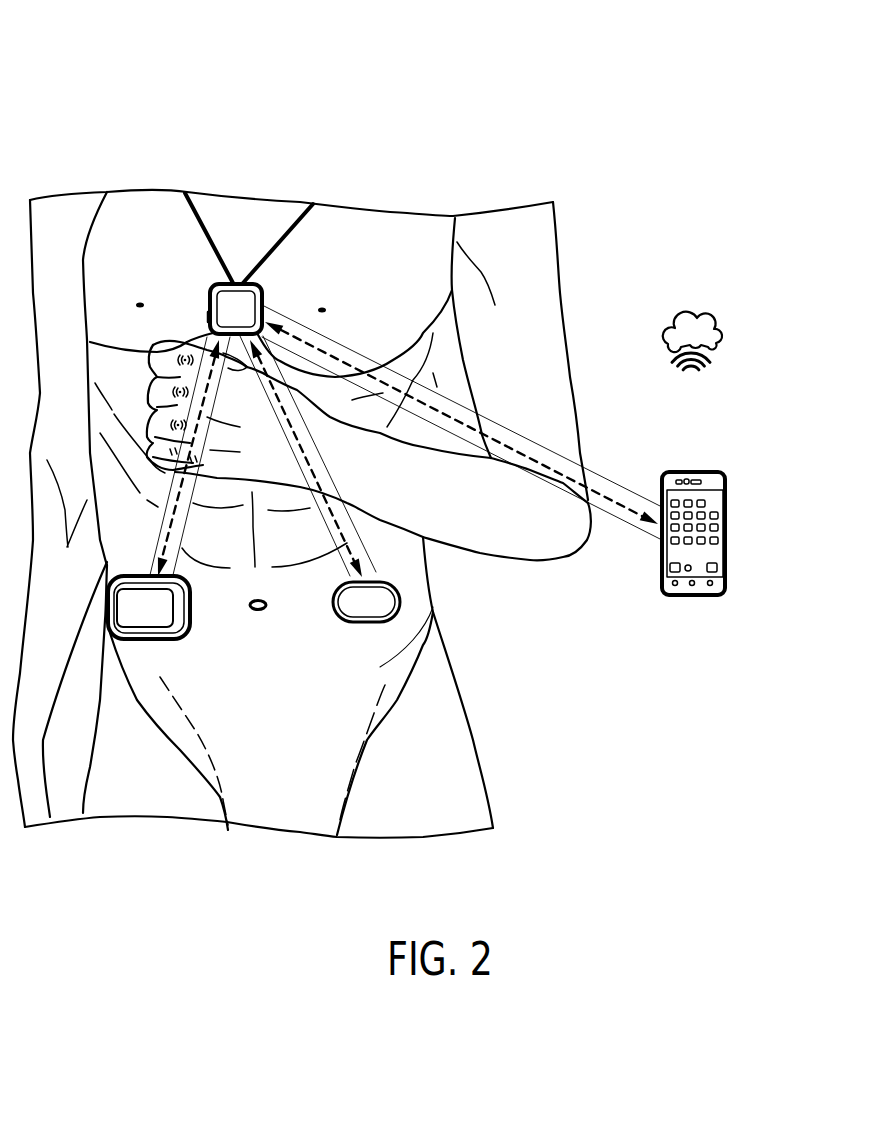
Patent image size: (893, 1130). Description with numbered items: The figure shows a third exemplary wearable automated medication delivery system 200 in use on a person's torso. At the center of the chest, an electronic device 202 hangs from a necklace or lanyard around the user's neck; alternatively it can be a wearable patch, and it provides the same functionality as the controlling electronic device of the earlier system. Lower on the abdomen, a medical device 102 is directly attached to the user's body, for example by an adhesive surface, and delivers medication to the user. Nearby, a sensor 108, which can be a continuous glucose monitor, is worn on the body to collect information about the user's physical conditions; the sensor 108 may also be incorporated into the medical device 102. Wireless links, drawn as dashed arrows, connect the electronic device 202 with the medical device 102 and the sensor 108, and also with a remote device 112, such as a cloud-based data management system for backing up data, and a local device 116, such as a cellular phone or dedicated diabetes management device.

The wearable automated medication delivery system 200 is at (86, 79).
The electronic device 202 is at (250, 260).
The medical device 102 is at (52, 878).
The sensor 108 is at (253, 877).
The remote device 112 is at (738, 262).
The local device 116 is at (777, 556).